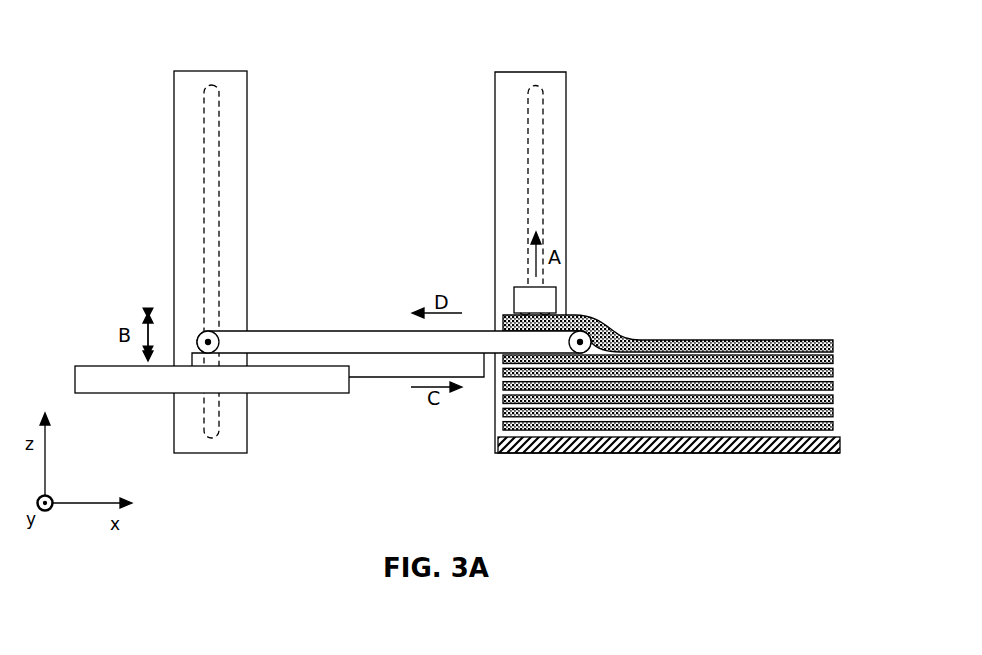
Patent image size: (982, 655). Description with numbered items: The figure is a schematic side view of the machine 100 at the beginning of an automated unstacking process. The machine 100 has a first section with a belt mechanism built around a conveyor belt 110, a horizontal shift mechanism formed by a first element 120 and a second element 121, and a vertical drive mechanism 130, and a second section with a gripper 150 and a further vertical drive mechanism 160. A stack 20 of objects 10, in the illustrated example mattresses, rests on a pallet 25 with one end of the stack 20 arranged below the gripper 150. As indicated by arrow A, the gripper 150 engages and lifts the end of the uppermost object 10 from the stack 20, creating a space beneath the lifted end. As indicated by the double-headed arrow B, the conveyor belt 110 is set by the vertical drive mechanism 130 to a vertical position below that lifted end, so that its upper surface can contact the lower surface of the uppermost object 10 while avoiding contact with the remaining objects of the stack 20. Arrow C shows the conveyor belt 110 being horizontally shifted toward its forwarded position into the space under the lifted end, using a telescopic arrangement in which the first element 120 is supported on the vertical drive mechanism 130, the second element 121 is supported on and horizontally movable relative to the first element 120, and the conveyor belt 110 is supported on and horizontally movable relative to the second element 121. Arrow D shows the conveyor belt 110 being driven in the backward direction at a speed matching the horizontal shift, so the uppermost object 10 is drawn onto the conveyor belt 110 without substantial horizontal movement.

The machine 100 is at (128, 54).
The vertical drive mechanism 130 is at (249, 114).
The vertical drive mechanism 160 is at (566, 113).
The gripper 150 is at (556, 295).
The conveyor belt 110 is at (363, 330).
The first element 120 is at (317, 395).
The second element 121 is at (385, 378).
The object 10 is at (745, 338).
The stack 20 is at (788, 322).
The pallet 25 is at (678, 450).